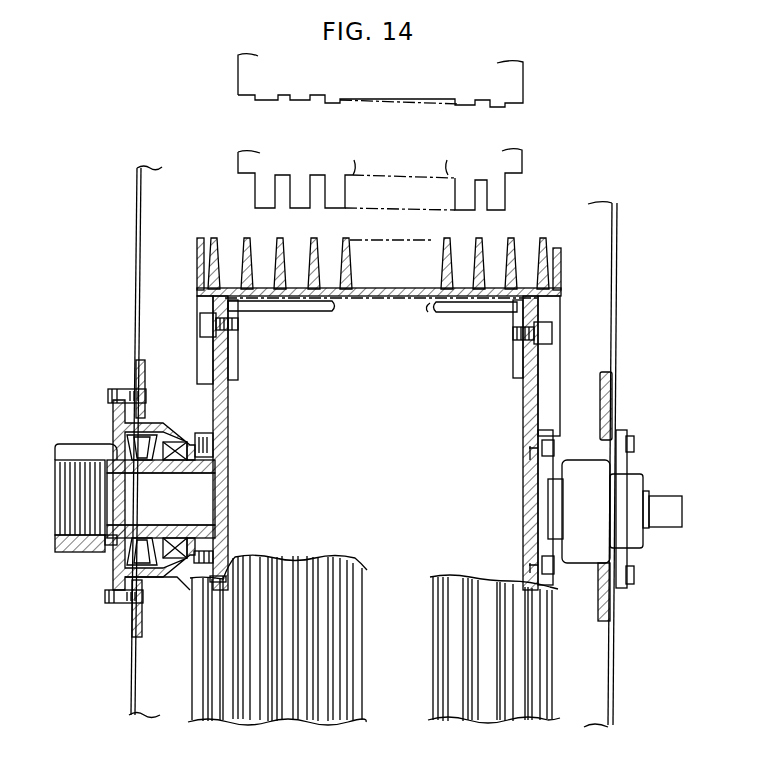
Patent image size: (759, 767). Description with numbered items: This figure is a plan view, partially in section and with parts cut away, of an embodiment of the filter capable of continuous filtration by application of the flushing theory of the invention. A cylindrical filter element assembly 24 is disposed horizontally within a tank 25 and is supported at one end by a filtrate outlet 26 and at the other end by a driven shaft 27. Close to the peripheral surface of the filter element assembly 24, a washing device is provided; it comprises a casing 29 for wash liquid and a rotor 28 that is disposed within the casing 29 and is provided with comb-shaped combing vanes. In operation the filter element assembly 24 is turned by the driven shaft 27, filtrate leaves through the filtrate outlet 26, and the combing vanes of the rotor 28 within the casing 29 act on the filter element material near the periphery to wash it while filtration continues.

The cylindrical filter element assembly 24 is at (562, 318).
The tank 25 is at (618, 242).
The filtrate outlet 26 is at (54, 484).
The driven shaft 27 is at (670, 498).
The rotor 28 is at (524, 163).
The casing 29 is at (524, 75).